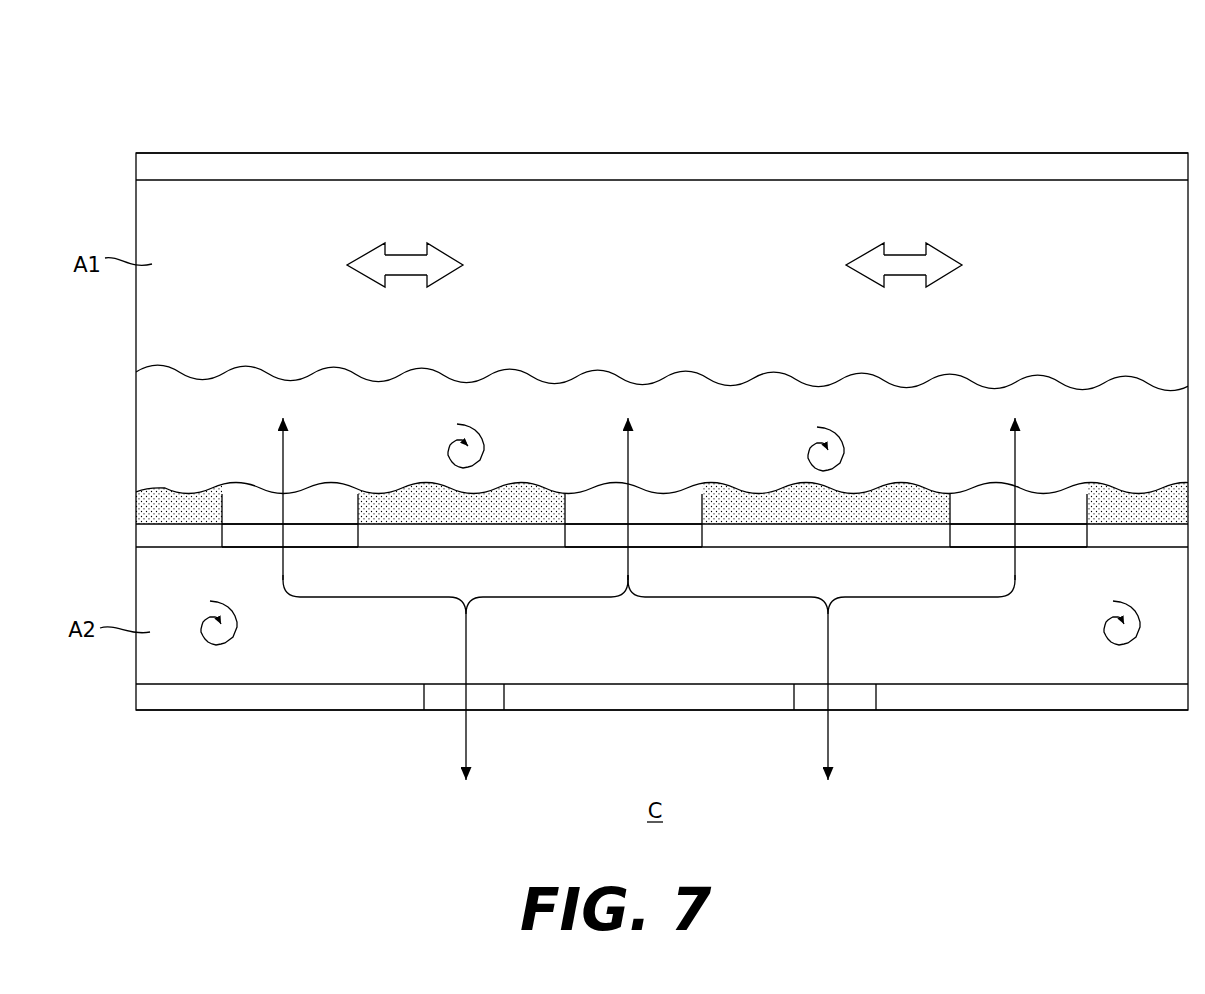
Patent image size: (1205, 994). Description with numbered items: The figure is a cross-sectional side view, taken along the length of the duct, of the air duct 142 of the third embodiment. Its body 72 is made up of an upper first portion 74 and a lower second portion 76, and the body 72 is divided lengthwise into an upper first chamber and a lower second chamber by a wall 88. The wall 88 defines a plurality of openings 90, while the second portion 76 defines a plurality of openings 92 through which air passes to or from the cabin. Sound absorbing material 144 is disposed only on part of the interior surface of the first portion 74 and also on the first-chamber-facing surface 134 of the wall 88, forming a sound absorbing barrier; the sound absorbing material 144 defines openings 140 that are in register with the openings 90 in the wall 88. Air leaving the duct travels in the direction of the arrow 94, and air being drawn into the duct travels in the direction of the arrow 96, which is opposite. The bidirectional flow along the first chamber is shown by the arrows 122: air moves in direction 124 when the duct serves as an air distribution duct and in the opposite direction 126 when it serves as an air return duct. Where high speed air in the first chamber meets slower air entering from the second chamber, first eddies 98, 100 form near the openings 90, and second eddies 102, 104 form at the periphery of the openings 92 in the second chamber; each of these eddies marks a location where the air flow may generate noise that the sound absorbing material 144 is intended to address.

The air duct 142 is at (948, 70).
The body 72 is at (694, 152).
The first portion 74 is at (800, 168).
The arrows 122 is at (411, 255).
The opposite direction 126 is at (358, 258).
The direction 124 is at (445, 247).
The sound absorbing material 144 is at (152, 444).
The first-chamber-facing surface 134 is at (750, 520).
The wall 88 is at (465, 540).
The openings 90 is at (325, 535).
The openings 140 is at (325, 507).
The arrow 96 is at (283, 452).
The arrow 94 is at (466, 742).
The first eddy 100 is at (440, 459).
The first eddy 98 is at (845, 456).
The second eddy 104 is at (238, 634).
The second eddy 102 is at (1095, 625).
The second portion 76 is at (302, 698).
The openings 92 is at (490, 698).